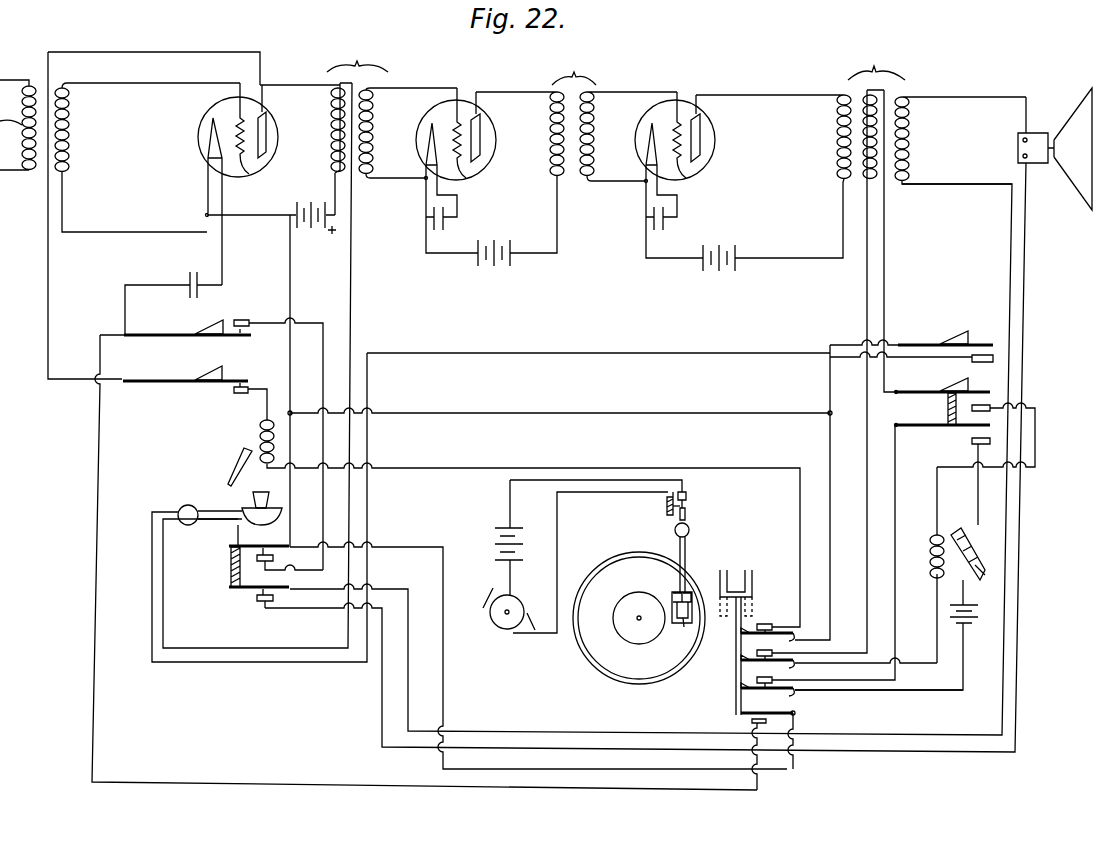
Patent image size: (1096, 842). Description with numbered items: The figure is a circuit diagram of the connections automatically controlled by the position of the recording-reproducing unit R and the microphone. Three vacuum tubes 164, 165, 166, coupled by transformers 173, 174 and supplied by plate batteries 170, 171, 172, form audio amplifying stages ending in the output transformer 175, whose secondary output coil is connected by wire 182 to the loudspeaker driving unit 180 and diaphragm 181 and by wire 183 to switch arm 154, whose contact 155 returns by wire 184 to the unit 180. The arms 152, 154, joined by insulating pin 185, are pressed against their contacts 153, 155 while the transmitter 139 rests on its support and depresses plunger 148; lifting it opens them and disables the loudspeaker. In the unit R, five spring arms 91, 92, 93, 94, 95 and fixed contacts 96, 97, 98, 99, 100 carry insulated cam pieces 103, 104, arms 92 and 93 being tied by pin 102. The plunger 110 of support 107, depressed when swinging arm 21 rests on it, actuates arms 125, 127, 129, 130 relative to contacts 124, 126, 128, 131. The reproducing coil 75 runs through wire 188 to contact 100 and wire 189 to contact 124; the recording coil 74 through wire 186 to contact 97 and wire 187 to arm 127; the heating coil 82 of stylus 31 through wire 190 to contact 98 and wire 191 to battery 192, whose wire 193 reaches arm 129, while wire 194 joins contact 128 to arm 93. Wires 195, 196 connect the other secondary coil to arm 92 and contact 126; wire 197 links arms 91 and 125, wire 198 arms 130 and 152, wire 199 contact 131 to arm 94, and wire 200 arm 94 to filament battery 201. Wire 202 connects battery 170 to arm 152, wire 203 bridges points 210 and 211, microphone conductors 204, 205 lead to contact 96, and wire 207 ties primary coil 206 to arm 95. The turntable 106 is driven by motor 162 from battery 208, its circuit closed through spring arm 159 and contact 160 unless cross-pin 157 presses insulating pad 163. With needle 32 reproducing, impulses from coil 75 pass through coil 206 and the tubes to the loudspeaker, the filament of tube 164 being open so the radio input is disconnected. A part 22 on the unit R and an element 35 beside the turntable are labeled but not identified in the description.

The swinging arm 21 is at (688, 545).
The stylus holder 22 is at (678, 594).
The recording stylus 31 is at (982, 562).
The needle 32 is at (240, 453).
The turntable 35 is at (615, 570).
The recording coil 74 is at (933, 535).
The reproducing coil 75 is at (259, 436).
The heating coil 82 is at (968, 541).
The spring arm 91 is at (928, 329).
The spring arm 92 is at (905, 390).
The spring arm 93 is at (912, 427).
The spring arm 94 is at (146, 333).
The spring arm 95 is at (155, 384).
The fixed contact 96 is at (994, 362).
The fixed contact 97 is at (992, 405).
The fixed contact 98 is at (973, 443).
The fixed contact 99 is at (243, 320).
The fixed contact 100 is at (240, 394).
The insulating button 102 is at (946, 405).
The insulated cam pieces 103 is at (942, 343).
The cam pieces 104 is at (208, 320).
The turntable 106 is at (584, 650).
The support 107 is at (750, 582).
The plunger 110 is at (735, 698).
The stationary contact 124 is at (763, 622).
The movable switch arm 125 is at (795, 638).
The stationary contact 126 is at (754, 649).
The movable switch arm 127 is at (795, 665).
The stationary contact 128 is at (755, 676).
The movable switch arm 129 is at (795, 692).
The movable switch arm 130 is at (796, 713).
The stationary contact 131 is at (738, 714).
The transmitter 139 is at (253, 500).
The plunger 148 is at (236, 530).
The switch arm 152 is at (270, 524).
The contact 153 is at (274, 558).
The switch arm 154 is at (243, 590).
The contact 155 is at (262, 603).
The cross-pin 157 is at (688, 513).
The switch arm 159 is at (668, 499).
The contact 160 is at (688, 494).
The turntable motor 162 is at (493, 610).
The insulating pad 163 is at (670, 516).
The vacuum tube 164 is at (210, 134).
The vacuum tube 165 is at (428, 110).
The vacuum tube 166 is at (660, 104).
The plate battery 170 is at (316, 236).
The plate battery 171 is at (500, 266).
The plate battery 172 is at (716, 273).
The transformer 173 is at (392, 110).
The transformer 174 is at (576, 117).
The output transformer 175 is at (803, 182).
The driving unit 180 is at (1037, 133).
The loudspeaker diaphragm 181 is at (1070, 168).
The wire 182 is at (953, 97).
The wire 183 is at (405, 589).
The wire 184 is at (1026, 236).
The insulating pin 185 is at (231, 563).
The wire 186 is at (935, 490).
The wire 187 is at (935, 598).
The wire 188 is at (252, 387).
The wire 189 is at (427, 468).
The wire 190 is at (980, 497).
The wire 191 is at (966, 590).
The battery 192 is at (978, 624).
The wire 193 is at (966, 656).
The wire 194 is at (893, 470).
The wire 195 is at (886, 241).
The wire 196 is at (865, 288).
The wire 197 is at (832, 342).
The wire 198 is at (393, 547).
The wire 199 is at (100, 345).
The wire 200 is at (128, 285).
The filament battery 201 is at (192, 272).
The wire 202 is at (292, 292).
The wire 203 is at (596, 412).
The conductor 204 is at (352, 218).
The conductor 205 is at (720, 348).
The primary coil 206 is at (331, 149).
The wire 207 is at (263, 70).
The battery 208 is at (495, 544).
The point 210 is at (828, 412).
The point 211 is at (291, 413).